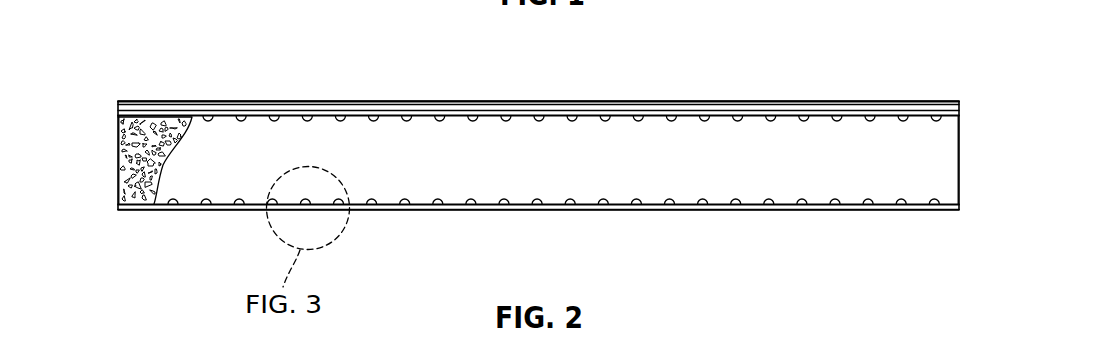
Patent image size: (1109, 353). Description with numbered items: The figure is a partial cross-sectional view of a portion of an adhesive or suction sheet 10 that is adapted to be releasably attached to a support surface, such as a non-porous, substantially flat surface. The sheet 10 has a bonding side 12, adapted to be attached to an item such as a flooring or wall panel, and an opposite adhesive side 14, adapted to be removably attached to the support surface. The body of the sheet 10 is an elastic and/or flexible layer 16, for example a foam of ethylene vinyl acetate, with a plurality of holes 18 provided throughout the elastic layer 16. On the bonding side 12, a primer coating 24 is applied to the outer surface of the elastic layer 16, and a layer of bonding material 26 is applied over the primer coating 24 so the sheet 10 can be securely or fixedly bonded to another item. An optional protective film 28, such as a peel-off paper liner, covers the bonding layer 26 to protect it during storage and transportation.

The adhesive sheet 10 is at (922, 73).
The bonding side 12 is at (798, 100).
The adhesive side 14 is at (818, 213).
The elastic layer 16 is at (624, 140).
The holes 18 is at (208, 117).
The primer coating 24 is at (140, 117).
The bonding layer 26 is at (150, 110).
The protective film 28 is at (364, 100).